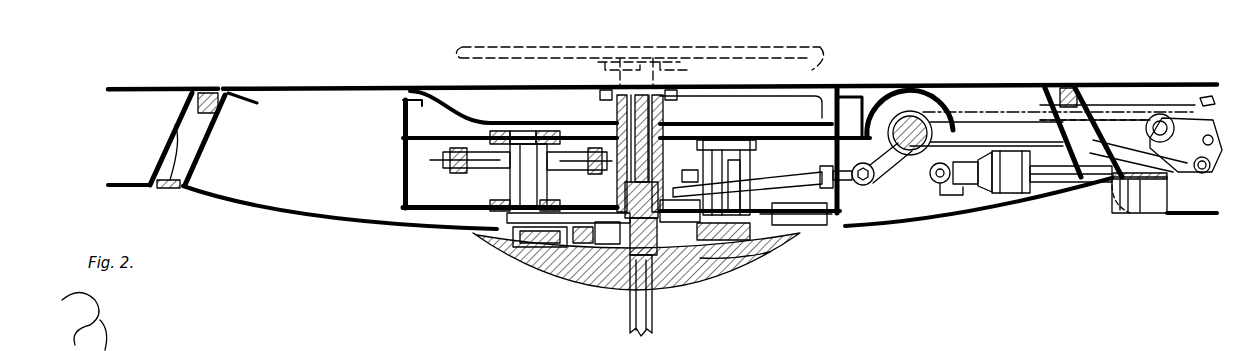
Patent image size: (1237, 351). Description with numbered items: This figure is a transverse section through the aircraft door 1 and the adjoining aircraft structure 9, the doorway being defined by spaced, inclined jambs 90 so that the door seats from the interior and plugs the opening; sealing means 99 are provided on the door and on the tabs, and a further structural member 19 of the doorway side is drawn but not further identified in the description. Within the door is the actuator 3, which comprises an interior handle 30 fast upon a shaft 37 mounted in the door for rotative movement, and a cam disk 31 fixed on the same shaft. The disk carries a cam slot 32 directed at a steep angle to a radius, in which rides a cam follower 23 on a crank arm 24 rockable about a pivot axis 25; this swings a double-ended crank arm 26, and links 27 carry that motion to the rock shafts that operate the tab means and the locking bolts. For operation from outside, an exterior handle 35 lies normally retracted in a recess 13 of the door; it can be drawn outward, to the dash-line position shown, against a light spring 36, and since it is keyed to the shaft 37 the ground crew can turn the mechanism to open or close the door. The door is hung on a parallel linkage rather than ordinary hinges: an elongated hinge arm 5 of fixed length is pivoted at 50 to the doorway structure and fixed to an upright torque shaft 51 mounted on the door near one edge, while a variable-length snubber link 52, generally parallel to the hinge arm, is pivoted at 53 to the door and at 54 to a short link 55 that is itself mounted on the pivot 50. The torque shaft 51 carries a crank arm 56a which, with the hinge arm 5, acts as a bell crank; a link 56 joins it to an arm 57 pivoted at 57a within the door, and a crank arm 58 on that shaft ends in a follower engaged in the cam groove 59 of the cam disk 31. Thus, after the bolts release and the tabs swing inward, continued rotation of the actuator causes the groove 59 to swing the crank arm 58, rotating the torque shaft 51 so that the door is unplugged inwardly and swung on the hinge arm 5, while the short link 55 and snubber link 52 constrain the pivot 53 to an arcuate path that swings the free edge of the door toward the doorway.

The door 1 is at (309, 77).
The actuator 3 is at (700, 284).
The hinge arm 5 is at (980, 128).
The aircraft structure 9 is at (141, 87).
The recess 13 is at (478, 118).
The block 19 is at (1132, 212).
The cam follower 23 is at (580, 244).
The crank arm 24 is at (555, 225).
The pivot axis 25 is at (524, 140).
The double-ended crank arm 26 is at (478, 170).
The links 27 is at (445, 160).
The handle 30 is at (632, 318).
The cam disk 31 is at (742, 236).
The cam slot 32 is at (572, 246).
The handle 35 is at (797, 90).
The spring 36 is at (662, 126).
The shaft 37 is at (603, 246).
The pivot 50 is at (1160, 116).
The torque shaft 51 is at (910, 130).
The snubber link 52 is at (1040, 194).
The pivot 53 is at (942, 186).
The pivot 54 is at (1199, 175).
The short link 55 is at (1185, 128).
The link 56 is at (803, 176).
The crank arm 56a is at (884, 160).
The arm 57 is at (697, 176).
The shaft 57a is at (740, 168).
The crank arm 58 is at (790, 226).
The cam groove 59 is at (722, 258).
The jambs 90 is at (163, 188).
The sealing means 99 is at (222, 100).